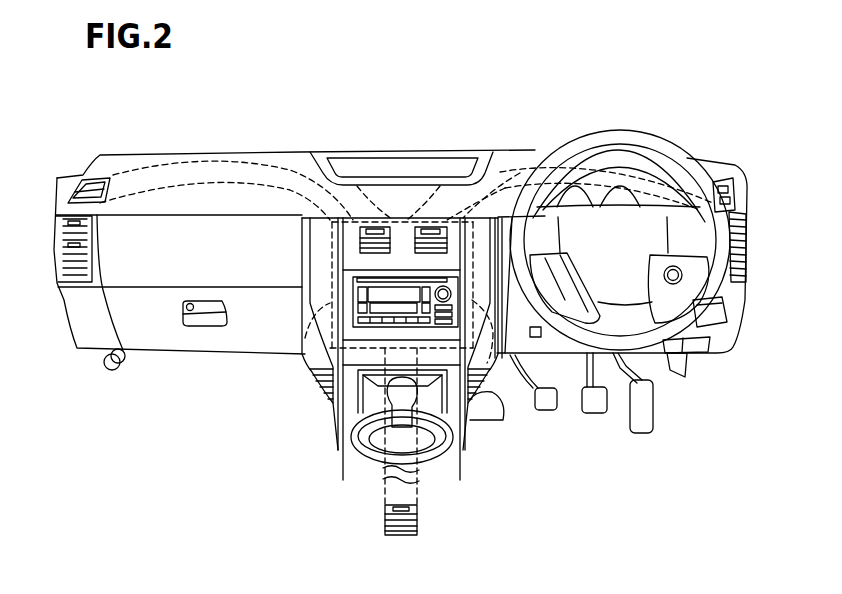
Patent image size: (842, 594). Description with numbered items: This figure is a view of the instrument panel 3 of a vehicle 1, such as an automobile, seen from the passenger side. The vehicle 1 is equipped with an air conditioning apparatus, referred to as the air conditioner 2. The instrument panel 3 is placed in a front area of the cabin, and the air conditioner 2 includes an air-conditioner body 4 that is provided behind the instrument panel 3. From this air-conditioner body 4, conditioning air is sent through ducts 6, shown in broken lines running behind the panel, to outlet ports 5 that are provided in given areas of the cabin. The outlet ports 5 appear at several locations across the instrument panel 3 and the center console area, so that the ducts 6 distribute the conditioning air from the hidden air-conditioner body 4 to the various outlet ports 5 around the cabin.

The vehicle 1 is at (452, 108).
The air conditioner 2 is at (201, 429).
The instrument panel 3 is at (305, 157).
The air-conditioner body 4 is at (331, 270).
The outlet ports 5 is at (52, 200).
The ducts 6 is at (152, 168).